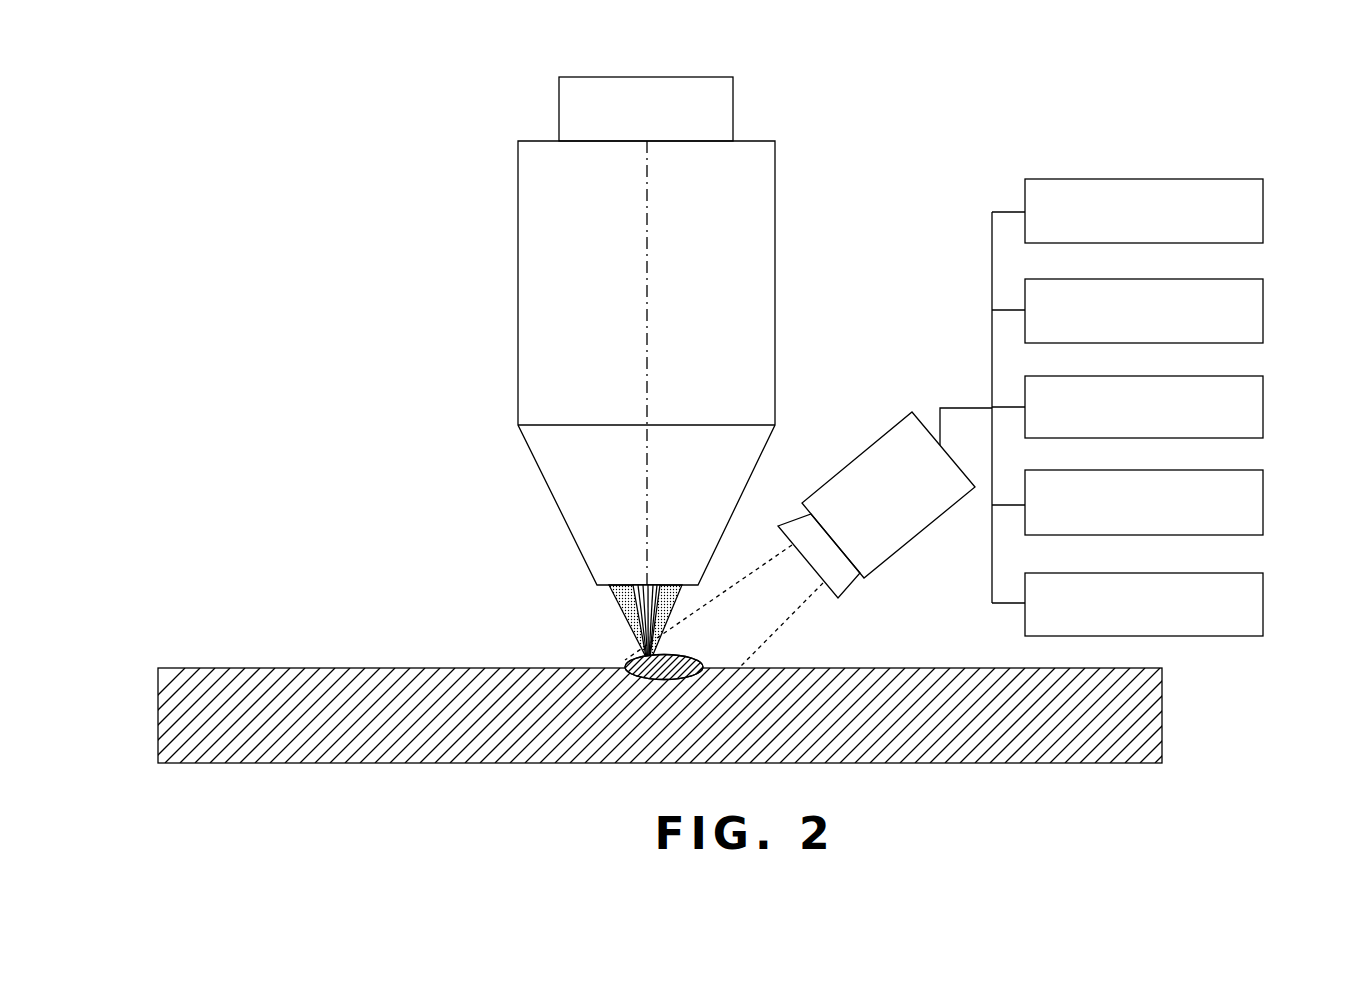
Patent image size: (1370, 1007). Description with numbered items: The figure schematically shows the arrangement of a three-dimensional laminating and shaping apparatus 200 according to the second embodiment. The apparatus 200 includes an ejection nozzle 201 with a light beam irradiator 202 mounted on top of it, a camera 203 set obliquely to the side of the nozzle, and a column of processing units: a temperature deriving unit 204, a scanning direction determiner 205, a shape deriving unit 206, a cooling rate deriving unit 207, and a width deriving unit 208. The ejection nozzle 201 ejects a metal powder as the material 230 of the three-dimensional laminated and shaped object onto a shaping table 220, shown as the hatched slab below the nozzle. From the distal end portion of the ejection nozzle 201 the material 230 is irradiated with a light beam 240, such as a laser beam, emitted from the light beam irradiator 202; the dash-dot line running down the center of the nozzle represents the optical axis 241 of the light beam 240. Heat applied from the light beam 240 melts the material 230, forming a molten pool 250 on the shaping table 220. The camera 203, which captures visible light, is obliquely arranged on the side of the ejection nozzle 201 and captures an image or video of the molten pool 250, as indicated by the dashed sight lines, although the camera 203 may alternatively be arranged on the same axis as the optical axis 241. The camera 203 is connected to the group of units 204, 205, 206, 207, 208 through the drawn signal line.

The three-dimensional laminating and shaping apparatus 200 is at (352, 128).
The ejection nozzle 201 is at (639, 363).
The light beam irradiator 202 is at (733, 107).
The camera 203 is at (903, 550).
The temperature deriving unit 204 is at (1263, 210).
The scanning direction determiner 205 is at (1263, 308).
The shape deriving unit 206 is at (1263, 405).
The cooling rate deriving unit 207 is at (1263, 503).
The width deriving unit 208 is at (1263, 601).
The shaping table 220 is at (322, 668).
The material 230 is at (625, 630).
The light beam 240 is at (610, 597).
The optical axis 241 is at (647, 268).
The molten pool 250 is at (627, 658).